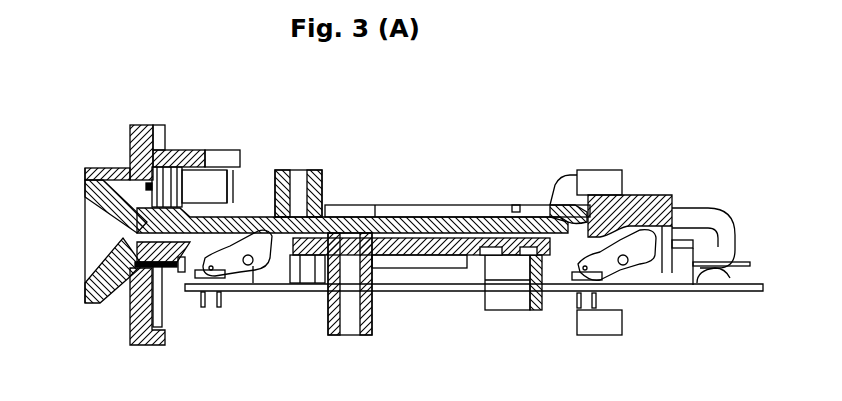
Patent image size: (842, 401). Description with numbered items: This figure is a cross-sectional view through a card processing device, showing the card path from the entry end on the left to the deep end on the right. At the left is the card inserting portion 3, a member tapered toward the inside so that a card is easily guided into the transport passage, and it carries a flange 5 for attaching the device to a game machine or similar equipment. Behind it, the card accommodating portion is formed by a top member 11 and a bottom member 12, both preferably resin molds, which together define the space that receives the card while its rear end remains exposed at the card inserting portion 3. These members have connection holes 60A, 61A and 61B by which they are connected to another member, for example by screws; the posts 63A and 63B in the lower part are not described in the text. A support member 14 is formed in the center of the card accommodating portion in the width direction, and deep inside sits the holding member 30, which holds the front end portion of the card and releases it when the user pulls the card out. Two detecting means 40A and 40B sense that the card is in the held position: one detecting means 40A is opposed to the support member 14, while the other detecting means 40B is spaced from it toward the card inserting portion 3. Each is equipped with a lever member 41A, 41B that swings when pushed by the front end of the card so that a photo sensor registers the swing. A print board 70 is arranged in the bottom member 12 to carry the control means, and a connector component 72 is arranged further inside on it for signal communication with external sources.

The card inserting portion 3 is at (113, 166).
The flange 5 is at (143, 125).
The connection hole 60A is at (227, 158).
The connection hole 61A is at (310, 170).
The top member 11 is at (446, 200).
The connection hole 61B is at (600, 175).
The support member 14 is at (652, 193).
The holding member 30 is at (733, 222).
The connector component 72 is at (735, 248).
The print board 70 is at (745, 291).
The detecting means 40A is at (628, 272).
The lever member 41A is at (575, 292).
The support 63B is at (600, 335).
The bottom member 12 is at (444, 275).
The support post 63A is at (365, 335).
The detecting means 40B is at (258, 272).
The lever member 41B is at (193, 297).